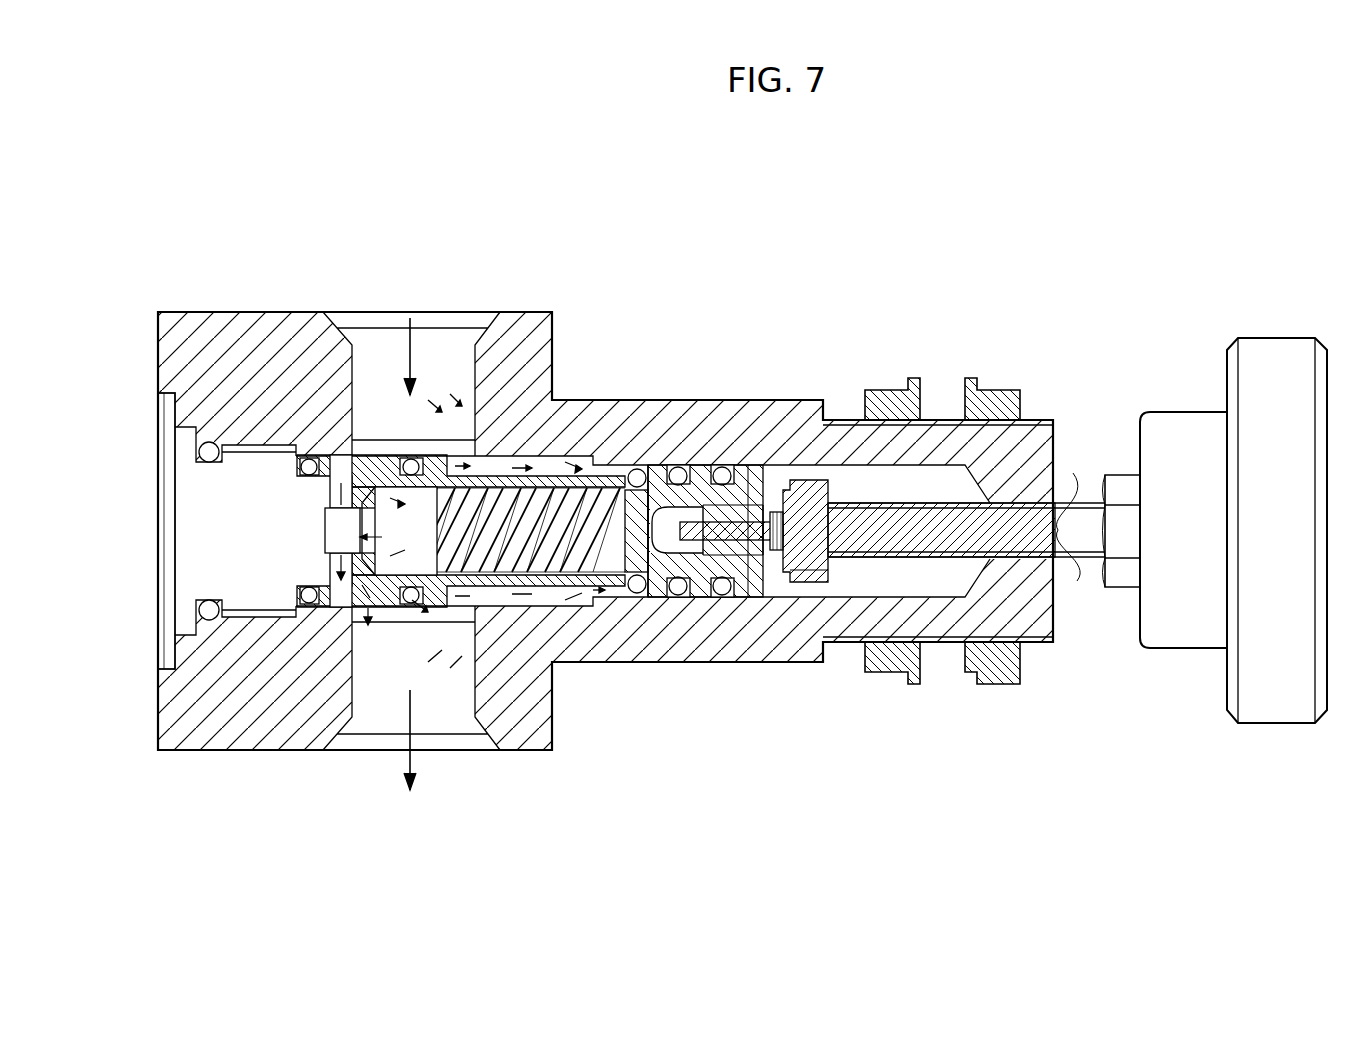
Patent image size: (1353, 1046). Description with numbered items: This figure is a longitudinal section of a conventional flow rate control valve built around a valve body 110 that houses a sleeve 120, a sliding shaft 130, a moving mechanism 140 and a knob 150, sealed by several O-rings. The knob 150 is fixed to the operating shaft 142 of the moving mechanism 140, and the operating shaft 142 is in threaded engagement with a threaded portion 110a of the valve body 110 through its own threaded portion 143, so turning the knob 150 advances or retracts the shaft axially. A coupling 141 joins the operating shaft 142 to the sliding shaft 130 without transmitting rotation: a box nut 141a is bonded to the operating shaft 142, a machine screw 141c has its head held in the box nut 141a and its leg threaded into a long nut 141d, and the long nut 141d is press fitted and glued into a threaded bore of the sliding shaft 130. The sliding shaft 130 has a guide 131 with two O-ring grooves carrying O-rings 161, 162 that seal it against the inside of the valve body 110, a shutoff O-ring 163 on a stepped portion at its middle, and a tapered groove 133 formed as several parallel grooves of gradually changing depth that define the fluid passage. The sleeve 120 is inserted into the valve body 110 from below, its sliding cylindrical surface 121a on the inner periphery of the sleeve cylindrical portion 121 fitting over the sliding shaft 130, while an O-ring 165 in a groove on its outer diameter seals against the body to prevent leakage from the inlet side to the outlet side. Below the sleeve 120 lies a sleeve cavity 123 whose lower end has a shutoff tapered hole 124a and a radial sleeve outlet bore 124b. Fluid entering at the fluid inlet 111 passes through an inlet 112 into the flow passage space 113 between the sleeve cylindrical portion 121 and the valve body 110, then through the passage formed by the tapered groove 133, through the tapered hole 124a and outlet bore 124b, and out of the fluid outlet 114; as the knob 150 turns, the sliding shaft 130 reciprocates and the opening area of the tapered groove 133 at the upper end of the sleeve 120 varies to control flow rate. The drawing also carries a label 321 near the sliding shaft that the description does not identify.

The valve body 110 is at (200, 312).
The threaded portion 110a is at (1015, 645).
The fluid inlet 111 is at (432, 320).
The inlet 112 is at (470, 455).
The flow passage space 113 is at (513, 463).
The fluid outlet 114 is at (432, 750).
The sleeve 120 is at (527, 600).
The sleeve cylindrical portion 121 is at (568, 590).
The sliding cylindrical surface 121a is at (585, 598).
The sleeve cavity 123 is at (405, 520).
The shutoff tapered hole 124a is at (338, 480).
The sleeve outlet bore 124b is at (360, 613).
The sliding shaft 130 is at (670, 510).
The guide 131 is at (703, 465).
The tapered groove 133 is at (533, 463).
The cartridge end wall 321 is at (598, 463).
The moving mechanism 140 is at (910, 525).
The coupling 141 is at (810, 547).
The box nut 141a is at (803, 582).
The machine screw 141c is at (766, 592).
The long nut 141d is at (776, 506).
The operating shaft 142 is at (1000, 530).
The threaded portion 143 is at (1063, 642).
The knob 150 is at (1270, 365).
The O-ring 161 is at (722, 598).
The O-ring 162 is at (684, 598).
The shutoff O-ring 163 is at (640, 598).
The O-ring 165 is at (423, 613).